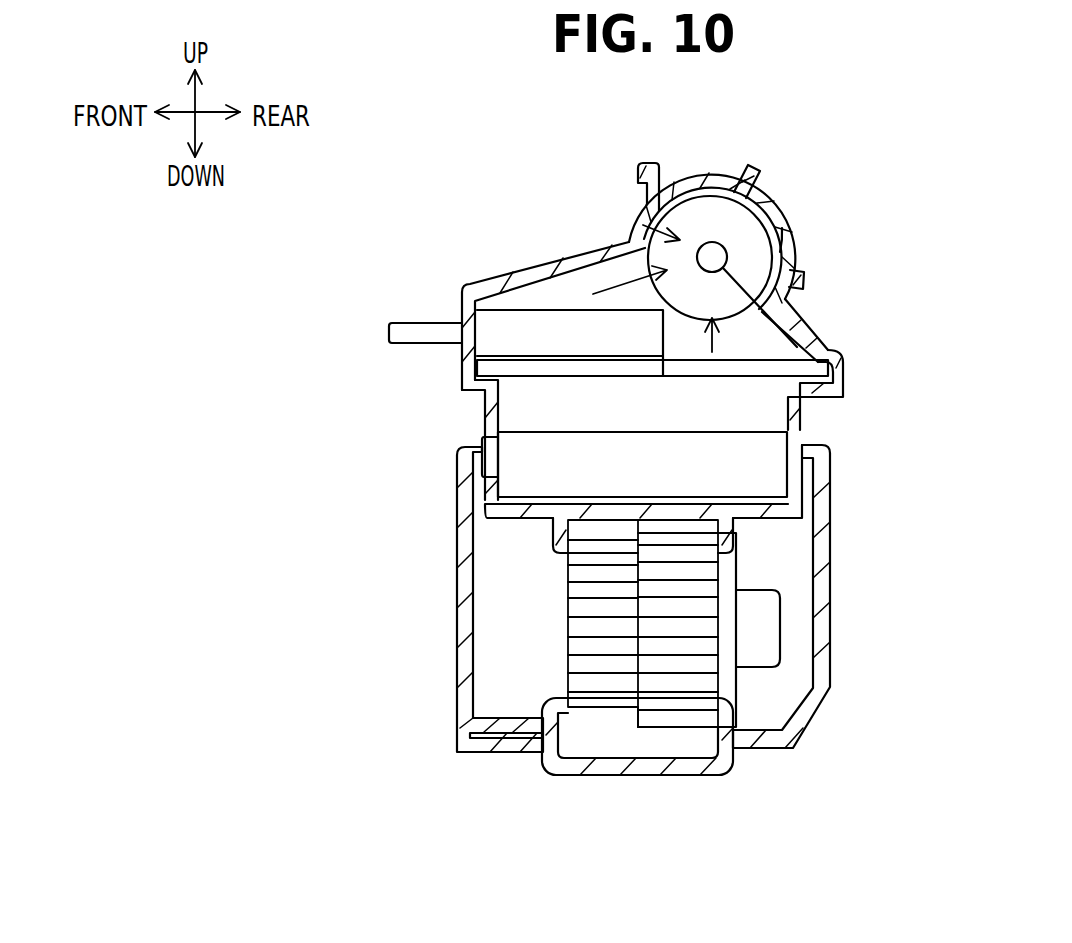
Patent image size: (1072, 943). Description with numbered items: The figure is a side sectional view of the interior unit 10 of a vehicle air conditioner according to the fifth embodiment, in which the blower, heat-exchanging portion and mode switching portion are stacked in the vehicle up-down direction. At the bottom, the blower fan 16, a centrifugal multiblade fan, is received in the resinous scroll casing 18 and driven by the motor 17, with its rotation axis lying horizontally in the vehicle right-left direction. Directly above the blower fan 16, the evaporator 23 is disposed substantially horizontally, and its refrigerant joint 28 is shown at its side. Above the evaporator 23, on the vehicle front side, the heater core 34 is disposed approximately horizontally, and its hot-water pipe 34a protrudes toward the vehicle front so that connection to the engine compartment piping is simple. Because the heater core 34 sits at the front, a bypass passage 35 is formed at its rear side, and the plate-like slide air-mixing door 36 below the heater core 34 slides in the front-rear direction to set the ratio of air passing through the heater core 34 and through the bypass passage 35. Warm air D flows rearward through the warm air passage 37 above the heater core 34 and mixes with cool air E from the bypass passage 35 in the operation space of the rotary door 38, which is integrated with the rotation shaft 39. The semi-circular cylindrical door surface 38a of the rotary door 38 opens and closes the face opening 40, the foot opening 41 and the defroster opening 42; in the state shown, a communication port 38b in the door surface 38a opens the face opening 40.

The interior unit 10 is at (430, 568).
The blower fan 16 is at (600, 705).
The motor 17 is at (757, 660).
The scroll casing 18 is at (648, 770).
The evaporator 23 is at (770, 470).
The refrigerant joint 28 is at (483, 442).
The heater core 34 is at (507, 327).
The hot-water pipe 34a is at (392, 330).
The bypass passage 35 is at (690, 348).
The slide air-mixing door 36 is at (557, 367).
The warm air passage 37 is at (548, 297).
The rotary door 38 is at (640, 228).
The door surface 38a is at (717, 182).
The communication port 38b is at (781, 240).
The rotation shaft 39 is at (712, 242).
The face opening 40 is at (776, 202).
The foot opening 41 is at (784, 297).
The defroster opening 42 is at (694, 186).
The warm air D is at (588, 327).
The cool air E is at (717, 343).